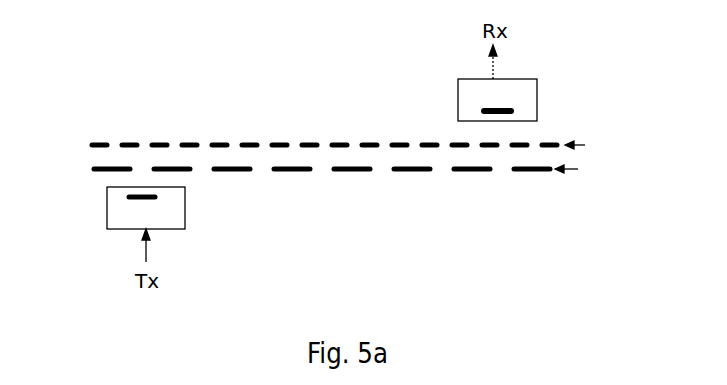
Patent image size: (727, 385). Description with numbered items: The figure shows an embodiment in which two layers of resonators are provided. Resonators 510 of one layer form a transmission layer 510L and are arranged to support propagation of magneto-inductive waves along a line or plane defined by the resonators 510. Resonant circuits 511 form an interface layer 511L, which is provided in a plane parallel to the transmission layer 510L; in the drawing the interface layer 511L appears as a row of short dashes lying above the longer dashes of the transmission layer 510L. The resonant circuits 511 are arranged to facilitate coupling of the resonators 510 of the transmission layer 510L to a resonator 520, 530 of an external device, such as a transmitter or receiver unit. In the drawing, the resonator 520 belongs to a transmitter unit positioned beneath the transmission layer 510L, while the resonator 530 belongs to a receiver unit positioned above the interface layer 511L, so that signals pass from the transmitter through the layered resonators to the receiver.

The resonators 510 is at (93, 171).
The resonant circuits 511 is at (93, 142).
The resonator of an external device 520 is at (157, 197).
The resonator of an external device 530 is at (482, 111).
The transmission layer 510L is at (578, 169).
The interface layer 511L is at (585, 145).